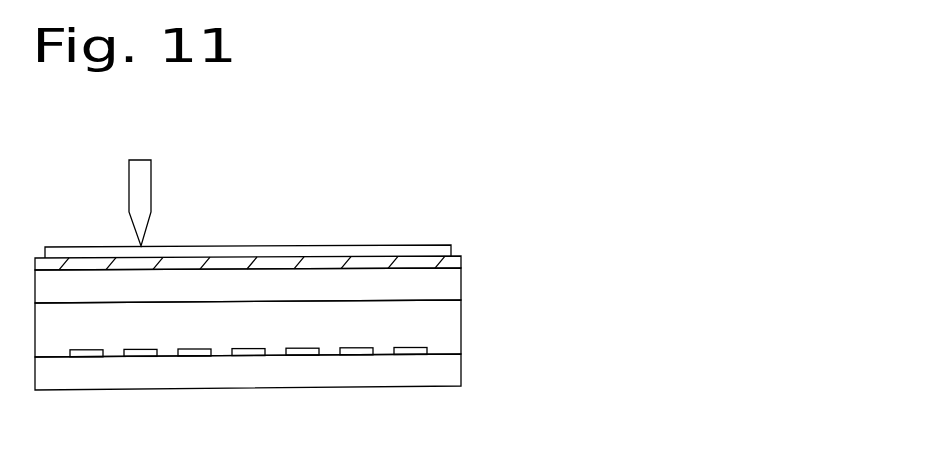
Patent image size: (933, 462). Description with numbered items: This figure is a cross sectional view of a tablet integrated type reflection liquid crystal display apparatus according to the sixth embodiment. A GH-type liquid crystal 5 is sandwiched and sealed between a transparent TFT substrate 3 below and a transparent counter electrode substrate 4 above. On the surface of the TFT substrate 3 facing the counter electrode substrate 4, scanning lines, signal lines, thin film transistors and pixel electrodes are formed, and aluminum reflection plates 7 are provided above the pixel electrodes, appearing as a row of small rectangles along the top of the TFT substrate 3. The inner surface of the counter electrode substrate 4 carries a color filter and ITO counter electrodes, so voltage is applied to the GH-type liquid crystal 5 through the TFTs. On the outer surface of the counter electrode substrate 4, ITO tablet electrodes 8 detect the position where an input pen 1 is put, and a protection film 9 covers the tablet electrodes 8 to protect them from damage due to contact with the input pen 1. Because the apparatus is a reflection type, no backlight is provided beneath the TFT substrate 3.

The input pen 1 is at (151, 187).
The protection film 9 is at (322, 246).
The tablet electrodes 8 is at (463, 250).
The counter electrode substrate 4 is at (462, 281).
The GH-type liquid crystal 5 is at (463, 323).
The TFT substrate 3 is at (463, 368).
The reflection plates 7 is at (185, 357).